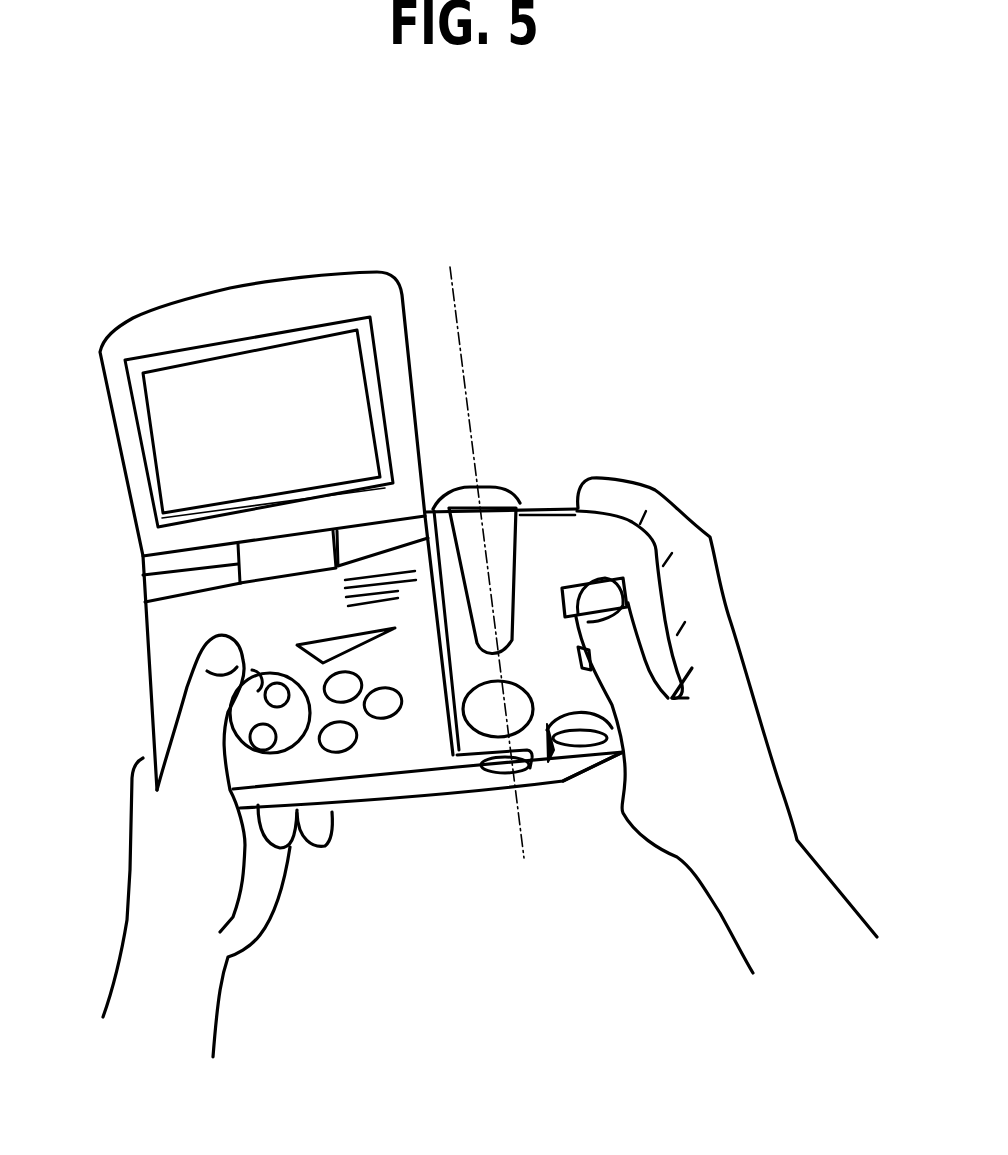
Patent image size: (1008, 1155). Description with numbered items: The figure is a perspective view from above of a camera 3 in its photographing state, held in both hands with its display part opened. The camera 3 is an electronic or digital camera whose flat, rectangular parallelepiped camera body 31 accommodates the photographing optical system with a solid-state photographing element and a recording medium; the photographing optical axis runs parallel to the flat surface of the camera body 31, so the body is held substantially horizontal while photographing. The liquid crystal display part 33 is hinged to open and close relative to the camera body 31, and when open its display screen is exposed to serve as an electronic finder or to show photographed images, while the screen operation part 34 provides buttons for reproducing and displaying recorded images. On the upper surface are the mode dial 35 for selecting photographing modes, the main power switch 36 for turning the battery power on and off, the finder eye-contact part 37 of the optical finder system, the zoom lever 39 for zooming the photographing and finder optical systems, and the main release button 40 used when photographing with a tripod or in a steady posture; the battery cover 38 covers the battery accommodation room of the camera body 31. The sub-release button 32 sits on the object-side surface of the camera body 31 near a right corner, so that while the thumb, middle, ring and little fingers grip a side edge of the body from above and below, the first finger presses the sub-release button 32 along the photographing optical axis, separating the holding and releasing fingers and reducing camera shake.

The camera 3 is at (386, 246).
The camera body 31 is at (144, 644).
The sub-release button 32 is at (577, 513).
The liquid crystal display part 33 is at (101, 350).
The screen operation part 34 is at (162, 726).
The mode dial 35 is at (481, 718).
The main power switch 36 is at (510, 760).
The finder eye-contact part 37 is at (573, 740).
The battery cover 38 is at (600, 784).
The zoom lever 39 is at (625, 583).
The main release button 40 is at (584, 658).